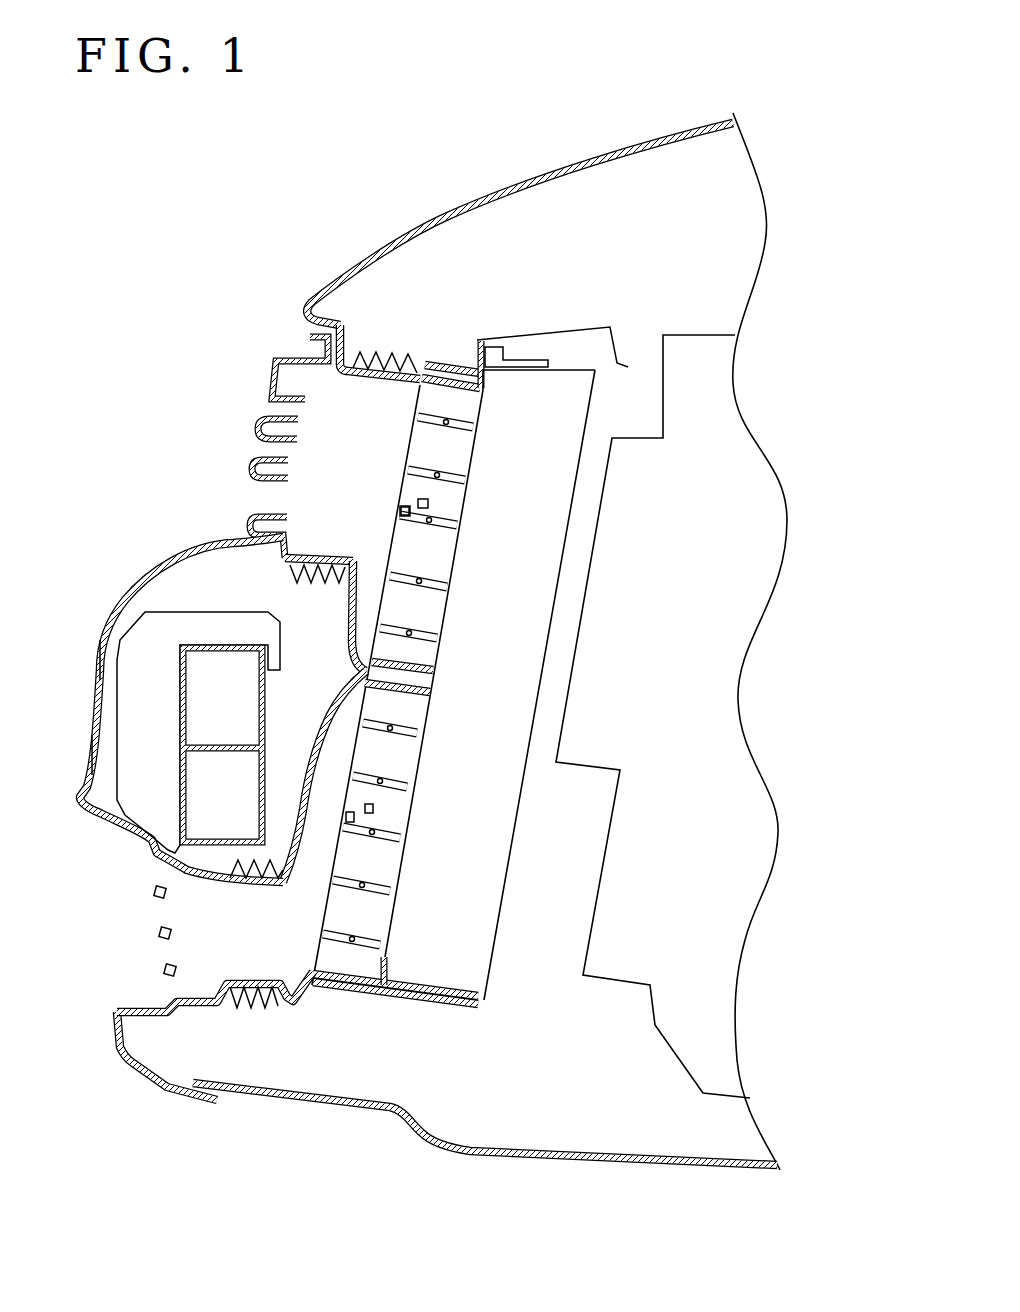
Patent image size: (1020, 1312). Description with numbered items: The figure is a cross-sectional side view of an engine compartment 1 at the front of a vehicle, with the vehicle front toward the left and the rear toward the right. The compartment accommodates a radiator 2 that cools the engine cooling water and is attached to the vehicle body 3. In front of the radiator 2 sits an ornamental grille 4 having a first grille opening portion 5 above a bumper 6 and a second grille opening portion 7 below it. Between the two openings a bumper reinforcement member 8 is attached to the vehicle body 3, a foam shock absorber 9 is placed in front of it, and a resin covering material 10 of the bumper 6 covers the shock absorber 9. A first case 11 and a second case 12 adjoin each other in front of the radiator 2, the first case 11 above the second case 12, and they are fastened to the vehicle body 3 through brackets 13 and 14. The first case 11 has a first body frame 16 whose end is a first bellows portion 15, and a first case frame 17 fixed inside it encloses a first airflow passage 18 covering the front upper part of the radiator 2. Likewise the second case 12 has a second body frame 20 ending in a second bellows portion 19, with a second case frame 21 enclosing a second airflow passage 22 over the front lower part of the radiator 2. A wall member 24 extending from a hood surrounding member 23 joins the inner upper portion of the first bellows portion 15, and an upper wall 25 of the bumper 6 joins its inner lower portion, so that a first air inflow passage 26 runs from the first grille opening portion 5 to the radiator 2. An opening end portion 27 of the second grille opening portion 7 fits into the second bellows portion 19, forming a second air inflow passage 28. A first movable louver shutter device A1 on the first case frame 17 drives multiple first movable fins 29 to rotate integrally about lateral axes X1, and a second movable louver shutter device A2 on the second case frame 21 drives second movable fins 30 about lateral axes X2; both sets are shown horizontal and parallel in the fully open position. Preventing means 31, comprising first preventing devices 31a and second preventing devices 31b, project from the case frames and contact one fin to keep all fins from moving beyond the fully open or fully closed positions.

The engine compartment 1 is at (660, 228).
The radiator 2 is at (571, 361).
The vehicle body 3 is at (518, 356).
The ornamental grille 4 is at (243, 404).
The first grille opening portion 5 is at (268, 495).
The bumper 6 is at (88, 759).
The second grille opening portion 7 is at (147, 924).
The bumper reinforcement member 8 is at (195, 648).
The foam shock absorber 9 is at (130, 620).
The resin covering material 10 is at (100, 657).
The first case 11 is at (423, 347).
The second case 12 is at (322, 1003).
The bracket 13 is at (440, 365).
The bracket 14 is at (398, 995).
The first bellows portion 15 is at (291, 582).
The first body frame 16 is at (345, 617).
The first case frame 17 is at (486, 391).
The first airflow passage 18 is at (442, 633).
The second bellows portion 19 is at (270, 1012).
The second body frame 20 is at (342, 683).
The second case frame 21 is at (313, 959).
The second airflow passage 22 is at (376, 867).
The hood surrounding member 23 is at (545, 185).
The wall member 24 is at (386, 384).
The upper wall 25 is at (310, 555).
The first air inflow passage 26 is at (331, 467).
The opening end portion 27 is at (264, 890).
The second air inflow passage 28 is at (202, 935).
The first movable fins 29 is at (453, 470).
The second movable fins 30 is at (404, 732).
The preventing means 31 is at (375, 680).
The first preventing devices 31a is at (412, 512).
The second preventing devices 31b is at (428, 504).
The first movable louver shutter device A1 is at (436, 622).
The second movable louver shutter device A2 is at (426, 716).
The lateral axes X1 is at (418, 572).
The lateral axes X2 is at (370, 834).